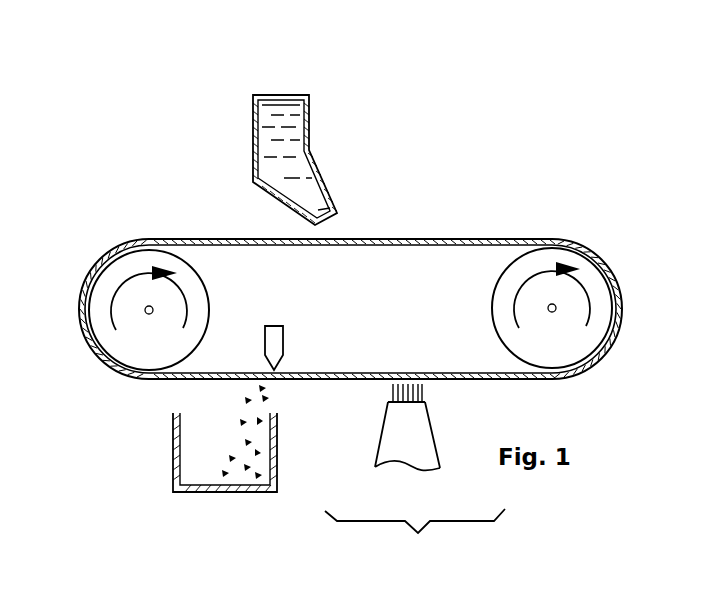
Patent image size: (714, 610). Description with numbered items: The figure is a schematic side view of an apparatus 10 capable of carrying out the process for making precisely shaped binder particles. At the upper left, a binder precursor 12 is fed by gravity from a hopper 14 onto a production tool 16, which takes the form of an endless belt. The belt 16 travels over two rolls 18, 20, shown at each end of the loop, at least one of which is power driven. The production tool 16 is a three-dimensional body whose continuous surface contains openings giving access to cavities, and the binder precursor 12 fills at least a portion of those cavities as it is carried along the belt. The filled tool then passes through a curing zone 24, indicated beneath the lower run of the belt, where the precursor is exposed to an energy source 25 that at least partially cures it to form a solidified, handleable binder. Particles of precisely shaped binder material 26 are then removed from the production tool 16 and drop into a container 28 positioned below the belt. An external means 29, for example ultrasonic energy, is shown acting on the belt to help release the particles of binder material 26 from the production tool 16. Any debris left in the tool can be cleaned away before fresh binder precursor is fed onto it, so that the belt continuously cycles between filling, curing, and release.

The apparatus 10 is at (416, 198).
The binder precursor 12 is at (277, 104).
The hopper 14 is at (309, 107).
The production tool 16 is at (238, 247).
The roll 18 is at (112, 346).
The roll 20 is at (502, 336).
The curing zone 24 is at (415, 534).
The energy source 25 is at (408, 448).
The particles of binder material 26 is at (235, 436).
The container 28 is at (240, 487).
The external means 29 is at (274, 347).